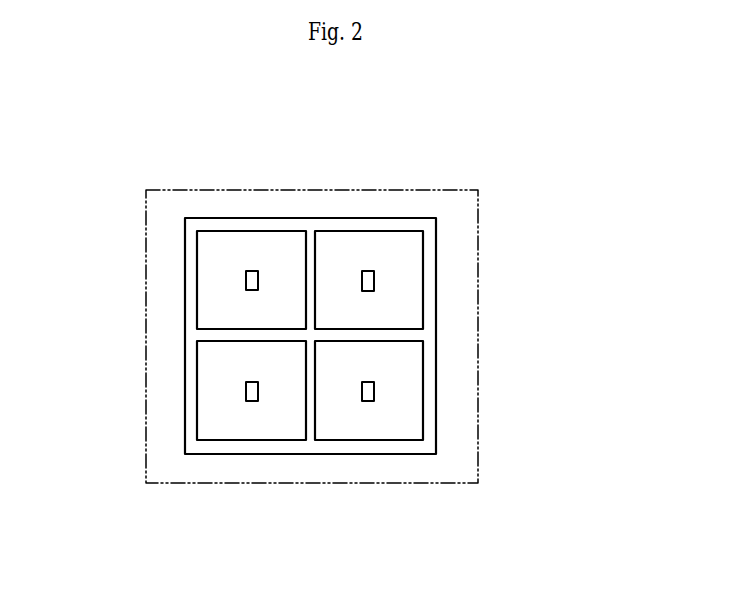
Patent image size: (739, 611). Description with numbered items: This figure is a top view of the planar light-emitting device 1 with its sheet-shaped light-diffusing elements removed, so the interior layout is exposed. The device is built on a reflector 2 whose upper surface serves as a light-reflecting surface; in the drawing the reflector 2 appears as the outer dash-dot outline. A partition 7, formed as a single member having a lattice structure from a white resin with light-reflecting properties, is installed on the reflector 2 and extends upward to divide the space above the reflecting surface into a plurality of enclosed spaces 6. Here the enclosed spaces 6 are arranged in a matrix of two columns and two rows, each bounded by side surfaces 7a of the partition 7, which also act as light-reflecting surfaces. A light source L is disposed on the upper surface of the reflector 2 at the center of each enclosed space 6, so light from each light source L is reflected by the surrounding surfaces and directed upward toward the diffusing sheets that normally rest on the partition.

The planar light-emitting device 1 is at (507, 172).
The reflector 2 is at (465, 333).
The enclosed spaces 6 is at (266, 232).
The partition 7 is at (317, 313).
The side surfaces 7a is at (220, 231).
The light sources L is at (245, 280).